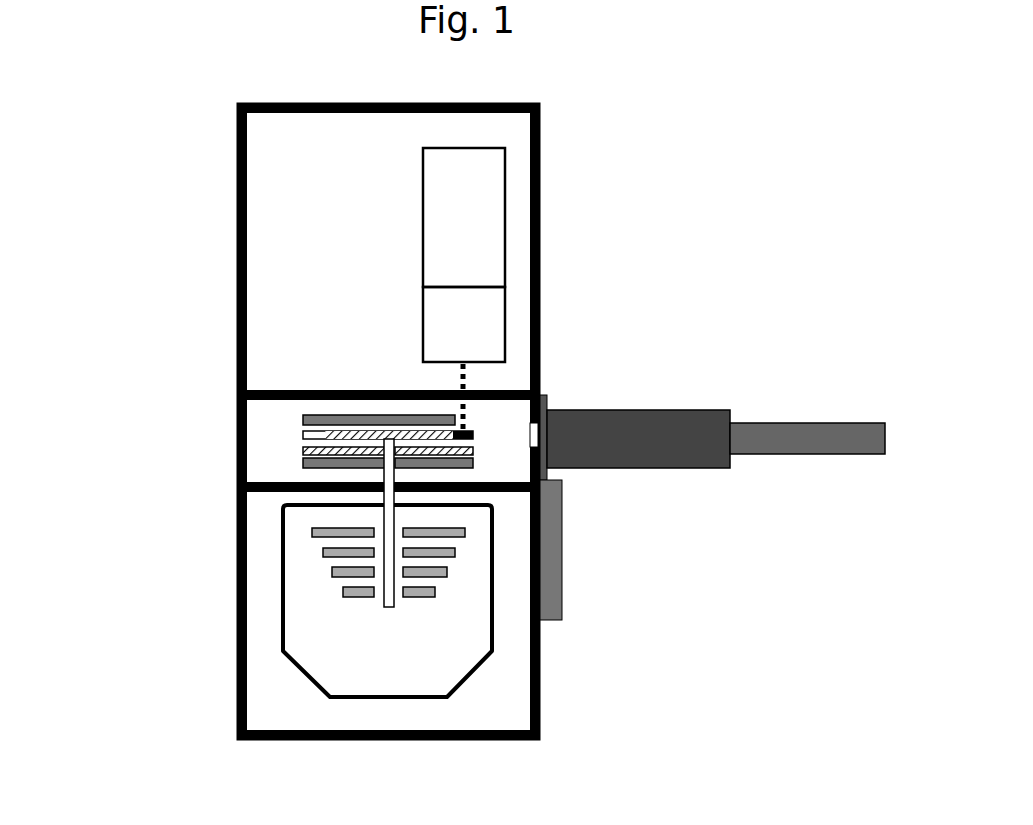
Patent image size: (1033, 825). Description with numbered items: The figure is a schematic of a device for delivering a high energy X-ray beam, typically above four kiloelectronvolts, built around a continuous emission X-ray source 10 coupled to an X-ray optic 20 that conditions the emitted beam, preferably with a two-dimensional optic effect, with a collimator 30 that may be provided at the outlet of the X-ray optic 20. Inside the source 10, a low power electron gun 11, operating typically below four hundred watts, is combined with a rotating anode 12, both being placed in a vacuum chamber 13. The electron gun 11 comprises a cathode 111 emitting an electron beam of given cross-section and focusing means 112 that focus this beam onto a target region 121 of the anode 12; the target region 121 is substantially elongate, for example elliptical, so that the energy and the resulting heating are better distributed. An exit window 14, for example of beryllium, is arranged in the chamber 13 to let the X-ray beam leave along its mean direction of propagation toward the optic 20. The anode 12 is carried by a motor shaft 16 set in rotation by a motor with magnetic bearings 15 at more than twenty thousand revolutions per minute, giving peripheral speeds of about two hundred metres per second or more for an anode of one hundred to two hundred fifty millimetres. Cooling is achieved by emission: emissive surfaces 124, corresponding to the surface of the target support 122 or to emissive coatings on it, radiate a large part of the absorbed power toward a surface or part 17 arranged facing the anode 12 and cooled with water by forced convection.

The X-ray source 10 is at (194, 208).
The electron gun 11 is at (675, 198).
The cathode 111 is at (505, 228).
The focusing means 112 is at (505, 315).
The rotating anode 12 is at (112, 285).
The target region 121 is at (455, 434).
The target support 122 is at (303, 437).
The emissive surfaces 124 is at (303, 450).
The vacuum chamber 13 is at (540, 130).
The exit window 14 is at (539, 421).
The motor with magnetic bearings 15 is at (330, 570).
The motor shaft 16 is at (385, 513).
The surface or part facing the anode 17 is at (470, 470).
The X-ray optic 20 is at (682, 489).
The collimator 30 is at (804, 470).